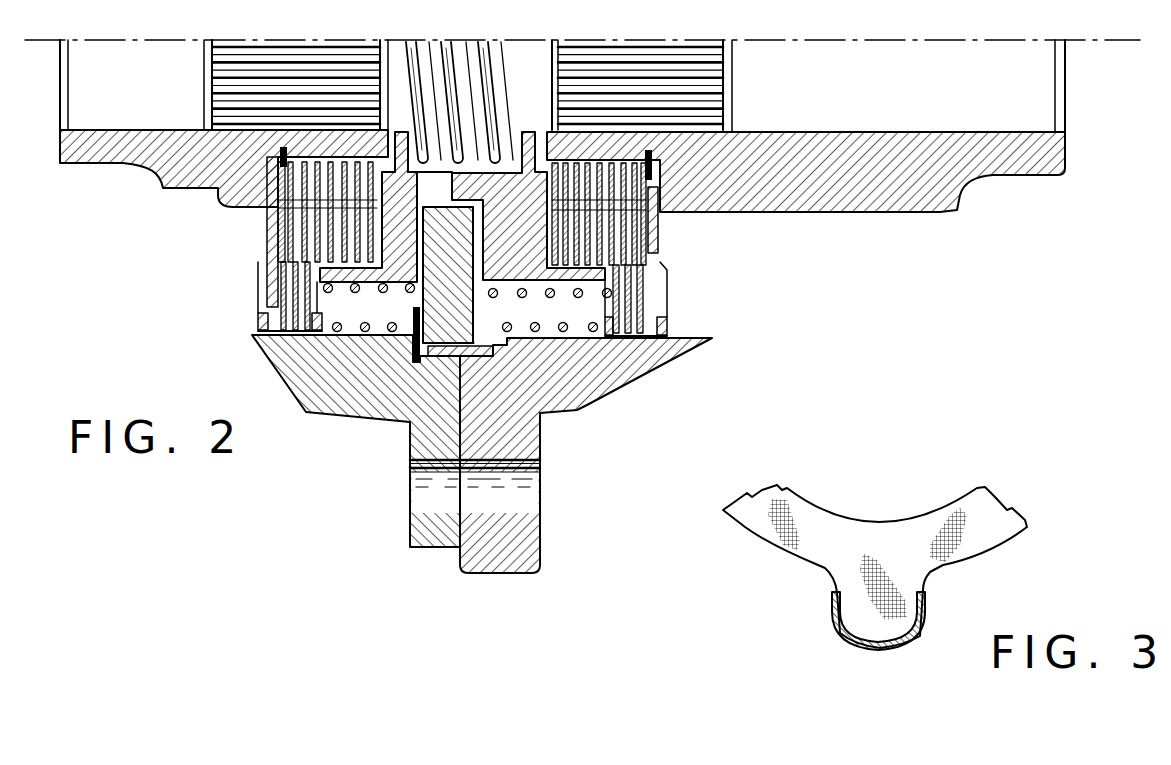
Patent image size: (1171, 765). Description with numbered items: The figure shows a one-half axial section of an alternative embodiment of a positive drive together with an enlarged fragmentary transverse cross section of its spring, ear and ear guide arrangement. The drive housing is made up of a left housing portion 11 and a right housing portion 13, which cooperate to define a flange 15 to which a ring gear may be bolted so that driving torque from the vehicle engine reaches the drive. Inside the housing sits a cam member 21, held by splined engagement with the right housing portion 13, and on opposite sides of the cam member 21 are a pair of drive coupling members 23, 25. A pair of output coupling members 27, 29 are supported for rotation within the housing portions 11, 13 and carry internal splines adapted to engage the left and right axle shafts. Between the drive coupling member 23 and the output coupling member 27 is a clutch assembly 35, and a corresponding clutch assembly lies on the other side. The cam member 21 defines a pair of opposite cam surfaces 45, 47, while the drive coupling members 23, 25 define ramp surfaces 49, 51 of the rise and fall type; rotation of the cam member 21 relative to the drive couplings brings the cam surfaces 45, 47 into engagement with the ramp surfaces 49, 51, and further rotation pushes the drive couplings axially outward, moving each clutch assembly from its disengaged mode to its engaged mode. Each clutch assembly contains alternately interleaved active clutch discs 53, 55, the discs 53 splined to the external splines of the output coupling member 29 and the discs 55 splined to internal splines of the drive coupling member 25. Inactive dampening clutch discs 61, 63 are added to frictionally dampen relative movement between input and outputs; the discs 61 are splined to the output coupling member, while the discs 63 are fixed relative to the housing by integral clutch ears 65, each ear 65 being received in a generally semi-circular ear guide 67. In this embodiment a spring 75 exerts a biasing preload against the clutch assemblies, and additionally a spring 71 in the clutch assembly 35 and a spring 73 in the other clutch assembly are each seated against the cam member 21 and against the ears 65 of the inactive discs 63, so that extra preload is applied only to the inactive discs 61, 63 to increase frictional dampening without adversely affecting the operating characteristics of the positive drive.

In FIG. 2, the left housing portion 11 is at (127, 153).
In FIG. 2, the right housing portion 13 is at (990, 160).
In FIG. 2, the flange 15 is at (540, 527).
In FIG. 2, the cam member 21 is at (453, 325).
In FIG. 2, the drive coupling member 23 is at (403, 278).
In FIG. 2, the drive coupling member 25 is at (557, 278).
In FIG. 2, the output coupling member 27 is at (215, 143).
In FIG. 2, the output coupling member 29 is at (722, 147).
In FIG. 2, the clutch assembly 35 is at (243, 233).
In FIG. 2, the cam surface 45 is at (415, 248).
In FIG. 2, the cam surface 47 is at (481, 232).
In FIG. 2, the ramp surface 49 is at (428, 267).
In FIG. 2, the ramp surface 51 is at (474, 257).
In FIG. 2, the clutch disc 53 is at (567, 163).
In FIG. 2, the clutch disc 55 is at (552, 236).
In FIG. 2, the clutch disc 61 is at (287, 218).
In FIG. 2, the clutch disc 63 is at (283, 262).
In FIG. 3, the clutch disc 63 is at (880, 527).
In FIG. 2, the clutch ear 65 is at (280, 280).
In FIG. 3, the clutch ear 65 is at (873, 613).
In FIG. 2, the ear guide 67 is at (257, 308).
In FIG. 3, the ear guide 67 is at (933, 610).
In FIG. 2, the spring 71 is at (393, 330).
In FIG. 2, the spring 73 is at (540, 332).
In FIG. 2, the spring 75 is at (492, 45).